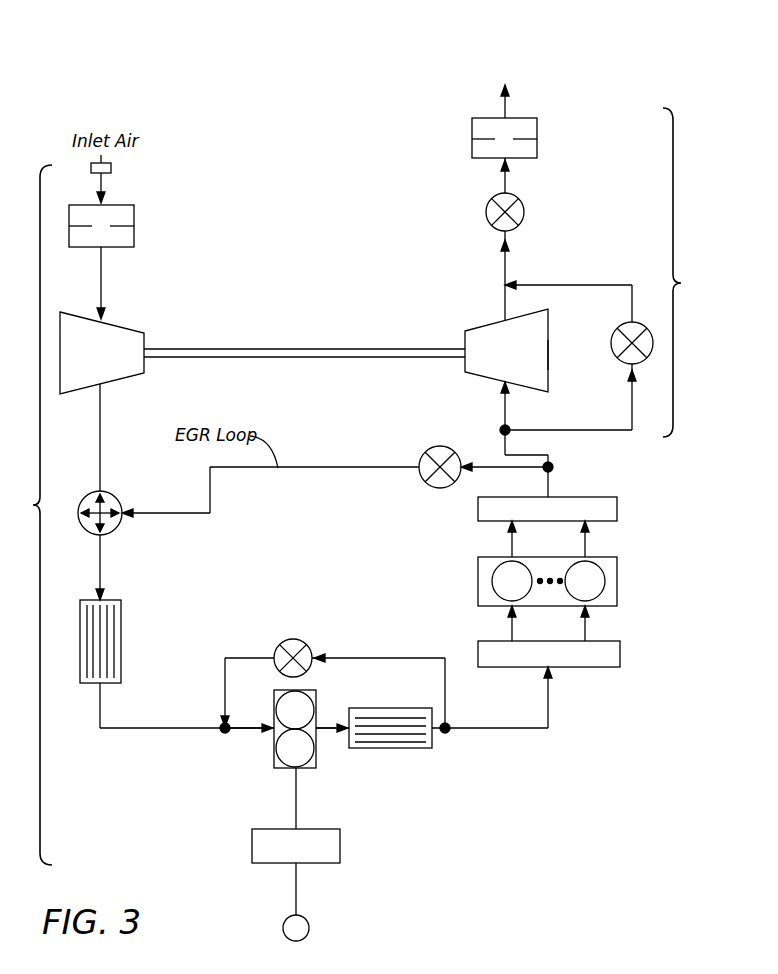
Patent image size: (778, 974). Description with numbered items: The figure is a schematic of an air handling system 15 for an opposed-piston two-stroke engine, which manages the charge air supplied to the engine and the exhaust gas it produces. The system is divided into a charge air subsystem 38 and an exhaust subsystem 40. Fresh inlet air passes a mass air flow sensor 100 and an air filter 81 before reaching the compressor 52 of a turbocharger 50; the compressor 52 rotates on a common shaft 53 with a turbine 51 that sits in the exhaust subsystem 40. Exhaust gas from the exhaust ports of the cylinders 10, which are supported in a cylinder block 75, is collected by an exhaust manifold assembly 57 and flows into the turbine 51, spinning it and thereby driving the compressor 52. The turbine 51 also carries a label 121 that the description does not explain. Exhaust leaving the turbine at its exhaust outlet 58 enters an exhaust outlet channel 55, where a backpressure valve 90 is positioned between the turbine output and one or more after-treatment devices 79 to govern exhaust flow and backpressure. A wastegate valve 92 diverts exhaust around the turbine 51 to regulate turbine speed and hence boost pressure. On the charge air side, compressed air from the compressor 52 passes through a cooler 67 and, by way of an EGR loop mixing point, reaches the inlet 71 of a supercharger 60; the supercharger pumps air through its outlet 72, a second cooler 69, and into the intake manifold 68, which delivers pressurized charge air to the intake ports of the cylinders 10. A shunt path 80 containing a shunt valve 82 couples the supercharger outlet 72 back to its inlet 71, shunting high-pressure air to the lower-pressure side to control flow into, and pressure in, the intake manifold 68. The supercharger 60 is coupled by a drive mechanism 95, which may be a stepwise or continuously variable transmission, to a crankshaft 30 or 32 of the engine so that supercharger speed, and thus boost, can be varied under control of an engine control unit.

The air handling system 15 is at (204, 92).
The charge air subsystem 38 is at (29, 515).
The mass air flow sensor 100 is at (111, 168).
The air filter 81 is at (134, 215).
The turbocharger 50 is at (233, 288).
The compressor 52 is at (68, 394).
The common shaft 53 is at (274, 349).
The turbine 51 is at (488, 378).
The turbine outlet 121 is at (548, 368).
The exhaust outlet 58 is at (505, 298).
The exhaust subsystem 40 is at (687, 272).
The wastegate valve 92 is at (656, 348).
The exhaust outlet channel 55 is at (562, 212).
The backpressure valve 90 is at (486, 214).
The after-treatment devices 79 is at (537, 142).
The exhaust manifold assembly 57 is at (617, 510).
The cylinder block 75 is at (617, 595).
The cylinders 10 is at (478, 583).
The intake manifold 68 is at (617, 653).
The cooler 67 is at (80, 643).
The shunt path 80 is at (351, 638).
The shunt valve 82 is at (288, 640).
The supercharger 60 is at (316, 700).
The supercharger inlet 71 is at (240, 731).
The supercharger outlet 72 is at (325, 730).
The second cooler 69 is at (412, 750).
The drive mechanism 95 is at (340, 846).
The crankshaft 30 is at (343, 903).
The crankshaft 32 is at (309, 928).